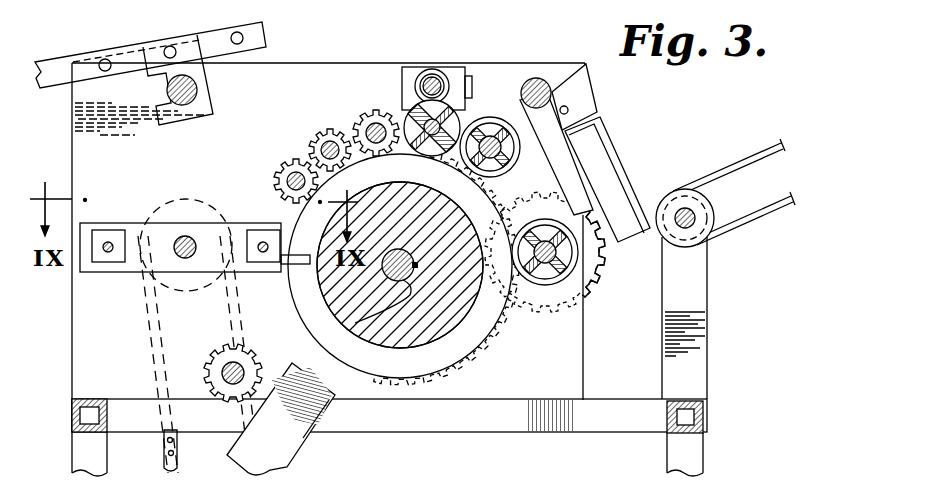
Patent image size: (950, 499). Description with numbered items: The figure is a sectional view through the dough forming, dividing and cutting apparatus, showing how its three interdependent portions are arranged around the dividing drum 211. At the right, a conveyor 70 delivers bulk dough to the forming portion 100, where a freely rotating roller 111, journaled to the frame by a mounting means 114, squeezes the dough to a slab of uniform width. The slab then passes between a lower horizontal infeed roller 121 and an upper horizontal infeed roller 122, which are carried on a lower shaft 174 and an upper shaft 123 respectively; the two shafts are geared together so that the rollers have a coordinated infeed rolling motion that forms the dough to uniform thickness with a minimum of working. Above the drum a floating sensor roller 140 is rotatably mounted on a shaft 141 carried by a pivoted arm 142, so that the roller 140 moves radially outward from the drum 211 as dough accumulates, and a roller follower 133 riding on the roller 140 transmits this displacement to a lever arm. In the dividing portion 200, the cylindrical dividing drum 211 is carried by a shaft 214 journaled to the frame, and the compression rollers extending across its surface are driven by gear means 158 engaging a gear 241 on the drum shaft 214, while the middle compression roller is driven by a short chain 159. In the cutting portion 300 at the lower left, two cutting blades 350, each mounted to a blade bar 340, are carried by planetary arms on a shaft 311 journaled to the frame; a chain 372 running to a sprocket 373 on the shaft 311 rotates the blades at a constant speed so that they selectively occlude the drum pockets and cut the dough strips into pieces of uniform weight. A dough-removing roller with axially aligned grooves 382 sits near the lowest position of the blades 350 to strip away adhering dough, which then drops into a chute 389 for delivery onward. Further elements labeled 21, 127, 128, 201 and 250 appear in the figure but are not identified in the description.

The base frame 21 is at (521, 418).
The conveyor 70 is at (780, 195).
The forming portion 100 is at (678, 167).
The freely-rotating roller 111 is at (615, 174).
The journaling means 114 is at (588, 92).
The lower horizontal dough infeed roller 121 is at (555, 272).
The upper horizontal dough infeed roller 122 is at (493, 140).
The upper shaft 123 is at (497, 137).
The gear tooth 127 is at (600, 268).
The guide plate 128 is at (578, 172).
The roller follower 133 is at (435, 69).
The floating roller 140 is at (432, 133).
The shaft 141 is at (405, 165).
The arm 142 is at (472, 106).
The gear means 158 is at (270, 165).
The short chain 159 is at (294, 157).
The lower shaft 174 is at (582, 292).
The dividing portion 200 is at (360, 104).
The drum periphery 201 is at (515, 180).
The dividing drum 211 is at (399, 324).
The shaft 214 is at (355, 323).
The gear 241 is at (470, 367).
The bracket 250 is at (272, 5).
The cutting portion 300 is at (135, 186).
The shaft 311 is at (192, 240).
The blade bar 340 is at (110, 230).
The cutting blade 350 is at (300, 268).
The chain 372 is at (163, 458).
The sprocket 373 is at (187, 200).
The axially aligned grooves 382 is at (205, 372).
The chute 389 is at (303, 457).